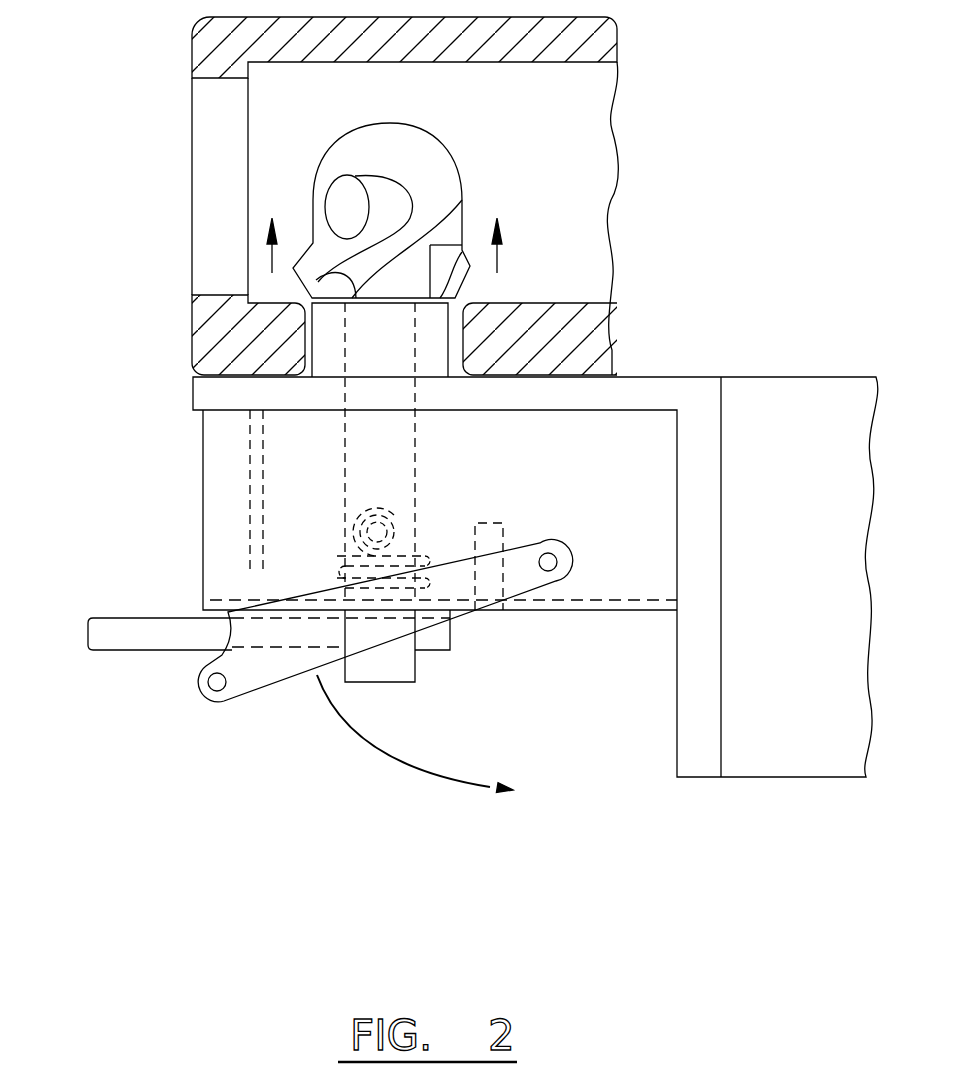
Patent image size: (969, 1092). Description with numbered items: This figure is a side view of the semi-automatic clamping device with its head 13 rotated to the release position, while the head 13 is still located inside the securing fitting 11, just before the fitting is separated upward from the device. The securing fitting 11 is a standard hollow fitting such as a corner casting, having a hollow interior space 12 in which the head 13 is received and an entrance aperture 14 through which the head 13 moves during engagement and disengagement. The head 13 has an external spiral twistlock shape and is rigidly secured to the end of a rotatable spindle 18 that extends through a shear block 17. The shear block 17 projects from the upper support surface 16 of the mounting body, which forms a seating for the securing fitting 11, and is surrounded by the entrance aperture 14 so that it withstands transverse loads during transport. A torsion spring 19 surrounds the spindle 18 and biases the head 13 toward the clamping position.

The securing fitting 11 is at (162, 51).
The hollow interior space 12 is at (553, 135).
The head 13 is at (360, 152).
The entrance aperture 14 is at (457, 352).
The upper support surface 16 is at (634, 383).
The shear block 17 is at (435, 315).
The rotatable spindle 18 is at (365, 458).
The torsion spring 19 is at (333, 560).